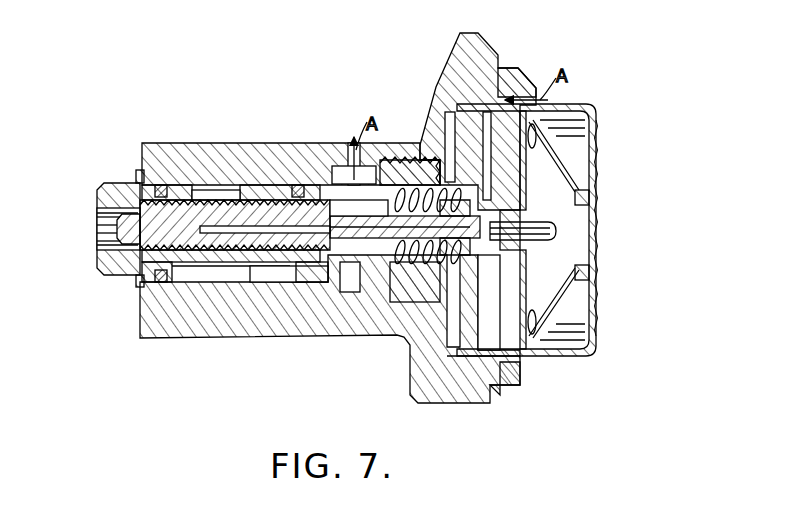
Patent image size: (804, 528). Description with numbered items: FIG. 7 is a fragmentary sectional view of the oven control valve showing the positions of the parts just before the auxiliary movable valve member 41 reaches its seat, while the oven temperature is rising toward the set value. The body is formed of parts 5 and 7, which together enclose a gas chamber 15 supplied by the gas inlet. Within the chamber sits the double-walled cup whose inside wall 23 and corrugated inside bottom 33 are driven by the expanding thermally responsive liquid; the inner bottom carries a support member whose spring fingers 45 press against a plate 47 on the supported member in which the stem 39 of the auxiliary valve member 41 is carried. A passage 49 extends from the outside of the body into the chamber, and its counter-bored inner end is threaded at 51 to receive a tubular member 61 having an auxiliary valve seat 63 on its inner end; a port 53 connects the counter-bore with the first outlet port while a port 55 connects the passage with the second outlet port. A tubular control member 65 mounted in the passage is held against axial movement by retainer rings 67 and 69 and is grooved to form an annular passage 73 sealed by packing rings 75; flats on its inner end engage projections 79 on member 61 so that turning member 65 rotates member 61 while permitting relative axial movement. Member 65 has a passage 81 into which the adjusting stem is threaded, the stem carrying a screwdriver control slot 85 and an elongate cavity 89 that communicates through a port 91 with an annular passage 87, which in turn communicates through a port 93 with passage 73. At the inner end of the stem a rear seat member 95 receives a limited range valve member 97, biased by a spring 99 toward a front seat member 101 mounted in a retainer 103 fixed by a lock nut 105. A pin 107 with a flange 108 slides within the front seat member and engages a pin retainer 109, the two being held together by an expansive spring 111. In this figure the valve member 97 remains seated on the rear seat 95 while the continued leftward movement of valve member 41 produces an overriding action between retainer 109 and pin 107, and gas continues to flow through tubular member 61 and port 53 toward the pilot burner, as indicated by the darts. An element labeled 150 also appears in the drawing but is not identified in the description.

The body part 5 is at (460, 60).
The body part 7 is at (512, 72).
The gas chamber 15 is at (566, 375).
The inside wall 23 is at (597, 165).
The inside bottom 33 is at (594, 322).
The stem 39 is at (580, 278).
The auxiliary movable valve member 41 is at (508, 365).
The spring fingers 45 is at (552, 166).
The plate 47 is at (526, 350).
The passage 49 is at (216, 300).
The threaded portion 51 is at (406, 338).
The port 53 is at (342, 148).
The port 55 is at (334, 200).
The tubular member 61 is at (438, 158).
The auxiliary valve seat 63 is at (470, 360).
The tubular control member 65 is at (106, 270).
The retainer ring 67 is at (334, 290).
The retainer ring 69 is at (138, 286).
The annular passage 73 is at (232, 175).
The packing rings 75 is at (158, 188).
The projections 79 is at (350, 292).
The passage 81 is at (97, 240).
The screwdriver control slot 85 is at (122, 232).
The annular passage 87 is at (176, 262).
The elongate cavity 89 is at (204, 265).
The port 91 is at (204, 192).
The port 93 is at (190, 188).
The rear seat member 95 is at (268, 252).
The limited range valve member 97 is at (304, 284).
The spring 99 is at (292, 185).
The front seat member 101 is at (380, 300).
The retainer 103 is at (246, 252).
The lock nut 105 is at (262, 226).
The pin 107 is at (504, 214).
The flange 108 is at (590, 211).
The pin retainer 109 is at (506, 250).
The expansive spring 111 is at (396, 300).
The port 150 is at (332, 166).